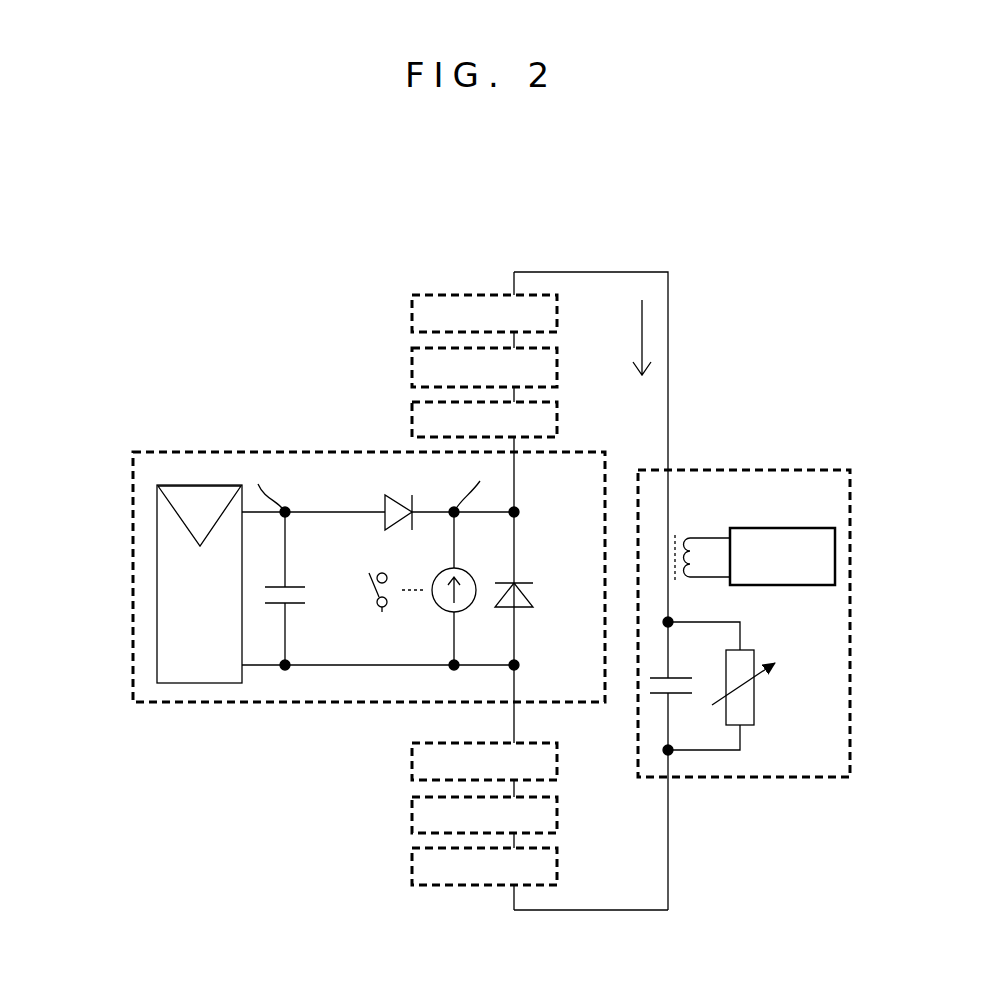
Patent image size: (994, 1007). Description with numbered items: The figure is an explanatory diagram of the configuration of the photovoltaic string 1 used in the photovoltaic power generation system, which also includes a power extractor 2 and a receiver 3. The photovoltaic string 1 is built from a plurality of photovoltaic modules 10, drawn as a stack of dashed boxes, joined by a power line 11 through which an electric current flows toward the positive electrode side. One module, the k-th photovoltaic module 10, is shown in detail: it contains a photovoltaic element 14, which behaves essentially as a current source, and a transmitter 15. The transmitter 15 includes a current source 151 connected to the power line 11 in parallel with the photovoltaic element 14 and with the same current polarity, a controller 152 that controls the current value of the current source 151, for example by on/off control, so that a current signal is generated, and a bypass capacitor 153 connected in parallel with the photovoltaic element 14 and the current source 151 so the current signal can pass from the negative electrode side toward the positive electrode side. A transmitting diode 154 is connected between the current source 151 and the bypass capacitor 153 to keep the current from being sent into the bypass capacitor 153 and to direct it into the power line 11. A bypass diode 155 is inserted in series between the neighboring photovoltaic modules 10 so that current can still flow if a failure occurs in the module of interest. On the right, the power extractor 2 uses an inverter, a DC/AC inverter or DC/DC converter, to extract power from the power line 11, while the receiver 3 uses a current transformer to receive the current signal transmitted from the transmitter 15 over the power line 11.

The photovoltaic string 1 is at (540, 223).
The power extractor 2 is at (790, 667).
The receiver 3 is at (820, 528).
The photovoltaic module 10 is at (443, 295).
The power line 11 is at (605, 272).
The photovoltaic element 14 is at (157, 545).
The transmitter 15 is at (322, 477).
The current source 151 is at (455, 568).
The controller 152 is at (383, 612).
The bypass capacitor 153 is at (275, 605).
The transmitting diode 154 is at (395, 463).
The bypass diode 155 is at (530, 597).